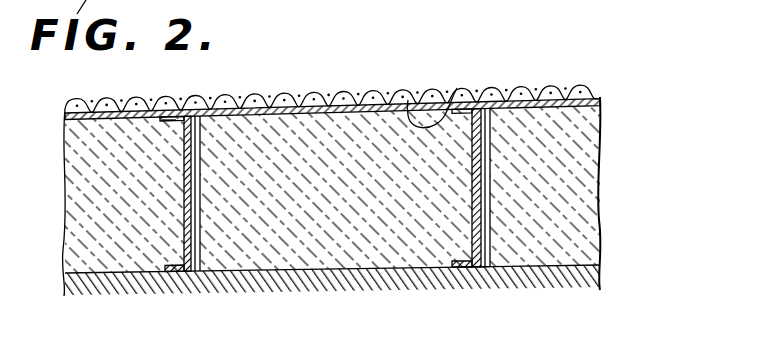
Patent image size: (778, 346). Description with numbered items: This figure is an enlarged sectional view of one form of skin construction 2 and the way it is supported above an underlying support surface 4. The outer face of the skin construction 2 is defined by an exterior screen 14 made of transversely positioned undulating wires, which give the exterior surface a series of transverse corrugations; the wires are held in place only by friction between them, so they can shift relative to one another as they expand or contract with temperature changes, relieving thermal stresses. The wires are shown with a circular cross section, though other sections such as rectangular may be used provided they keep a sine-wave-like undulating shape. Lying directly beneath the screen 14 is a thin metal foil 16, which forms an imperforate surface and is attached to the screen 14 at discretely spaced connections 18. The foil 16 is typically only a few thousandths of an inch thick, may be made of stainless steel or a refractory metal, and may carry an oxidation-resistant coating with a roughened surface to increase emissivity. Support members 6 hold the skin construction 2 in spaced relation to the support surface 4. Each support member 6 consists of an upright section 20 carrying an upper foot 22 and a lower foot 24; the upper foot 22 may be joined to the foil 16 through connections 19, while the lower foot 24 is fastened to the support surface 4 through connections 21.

The skin construction 2 is at (437, 63).
The support surface 4 is at (601, 244).
The support members 6 is at (204, 253).
The exterior screen 14 is at (521, 104).
The thin metal foil 16 is at (601, 101).
The connections 18 is at (211, 109).
The connections 19 is at (163, 120).
The upright section 20 is at (200, 212).
The connections 21 is at (455, 260).
The upper foot 22 is at (173, 121).
The lower foot 24 is at (177, 265).